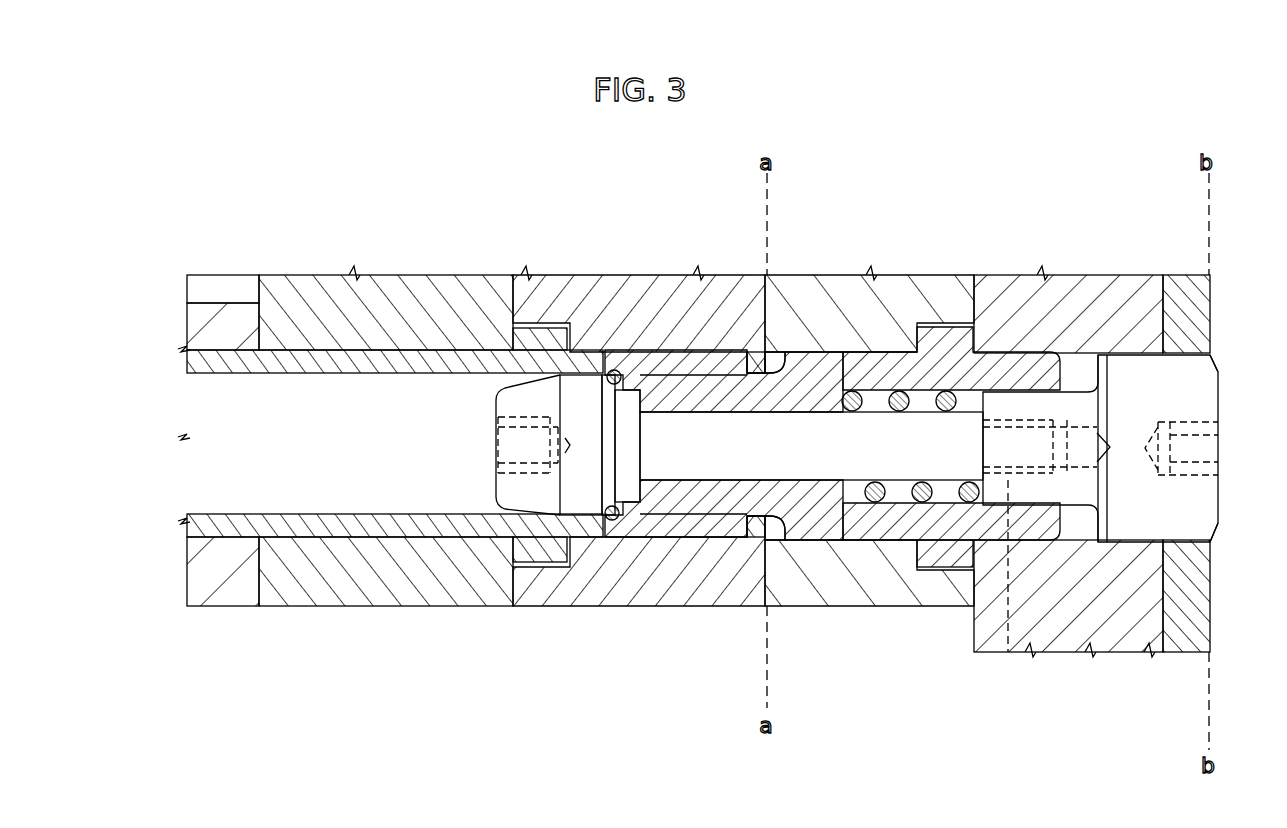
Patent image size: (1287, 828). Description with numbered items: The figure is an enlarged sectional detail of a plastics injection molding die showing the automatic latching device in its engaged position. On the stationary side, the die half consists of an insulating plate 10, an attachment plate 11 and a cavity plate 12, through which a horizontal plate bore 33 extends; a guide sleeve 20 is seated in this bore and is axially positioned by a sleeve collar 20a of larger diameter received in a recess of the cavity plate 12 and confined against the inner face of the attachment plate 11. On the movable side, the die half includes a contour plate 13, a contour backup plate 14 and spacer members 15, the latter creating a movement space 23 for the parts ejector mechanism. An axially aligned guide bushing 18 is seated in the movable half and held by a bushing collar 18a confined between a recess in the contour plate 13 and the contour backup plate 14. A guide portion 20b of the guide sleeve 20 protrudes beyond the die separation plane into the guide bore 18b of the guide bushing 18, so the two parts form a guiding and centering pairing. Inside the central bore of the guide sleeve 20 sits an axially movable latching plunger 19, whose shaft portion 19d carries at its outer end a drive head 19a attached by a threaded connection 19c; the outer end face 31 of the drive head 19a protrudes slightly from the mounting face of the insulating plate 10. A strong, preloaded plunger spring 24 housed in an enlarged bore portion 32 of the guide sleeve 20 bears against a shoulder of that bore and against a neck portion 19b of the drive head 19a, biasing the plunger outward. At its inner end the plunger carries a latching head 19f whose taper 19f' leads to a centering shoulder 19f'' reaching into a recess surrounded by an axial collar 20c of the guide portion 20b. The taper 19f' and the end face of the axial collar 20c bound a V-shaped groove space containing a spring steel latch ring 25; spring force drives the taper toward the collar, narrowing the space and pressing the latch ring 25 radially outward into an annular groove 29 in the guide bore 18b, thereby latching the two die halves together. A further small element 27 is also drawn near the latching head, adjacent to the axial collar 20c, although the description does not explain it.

The insulating plate 10 is at (1195, 295).
The attachment plate 11 is at (1115, 292).
The cavity plate 12 is at (840, 290).
The contour plate 13 is at (722, 300).
The contour backup plate 14 is at (392, 315).
The spacer members 15 is at (238, 320).
The guide bushing 18 is at (185, 363).
The bushing collar 18a is at (538, 550).
The guide bore 18b is at (375, 515).
The latching plunger 19 is at (1220, 522).
The drive head 19a is at (1178, 505).
The neck portion 19b is at (1077, 490).
The threaded connection 19c is at (1010, 652).
The shaft portion 19d is at (807, 433).
The latching head 19f is at (547, 361).
The taper 19f' is at (583, 369).
The centering shoulder 19f'' is at (635, 607).
The guide sleeve 20 is at (813, 517).
The sleeve collar 20a is at (950, 543).
The guide portion 20b is at (725, 500).
The axial collar 20c is at (628, 390).
The movement space 23 is at (213, 283).
The plunger spring 24 is at (877, 503).
The latch ring 25 is at (625, 492).
The O-ring 27 is at (641, 412).
The annular groove 29 is at (613, 508).
The outer end face 31 is at (1218, 395).
The enlarged bore portion 32 is at (923, 400).
The plate bore 33 is at (1077, 370).